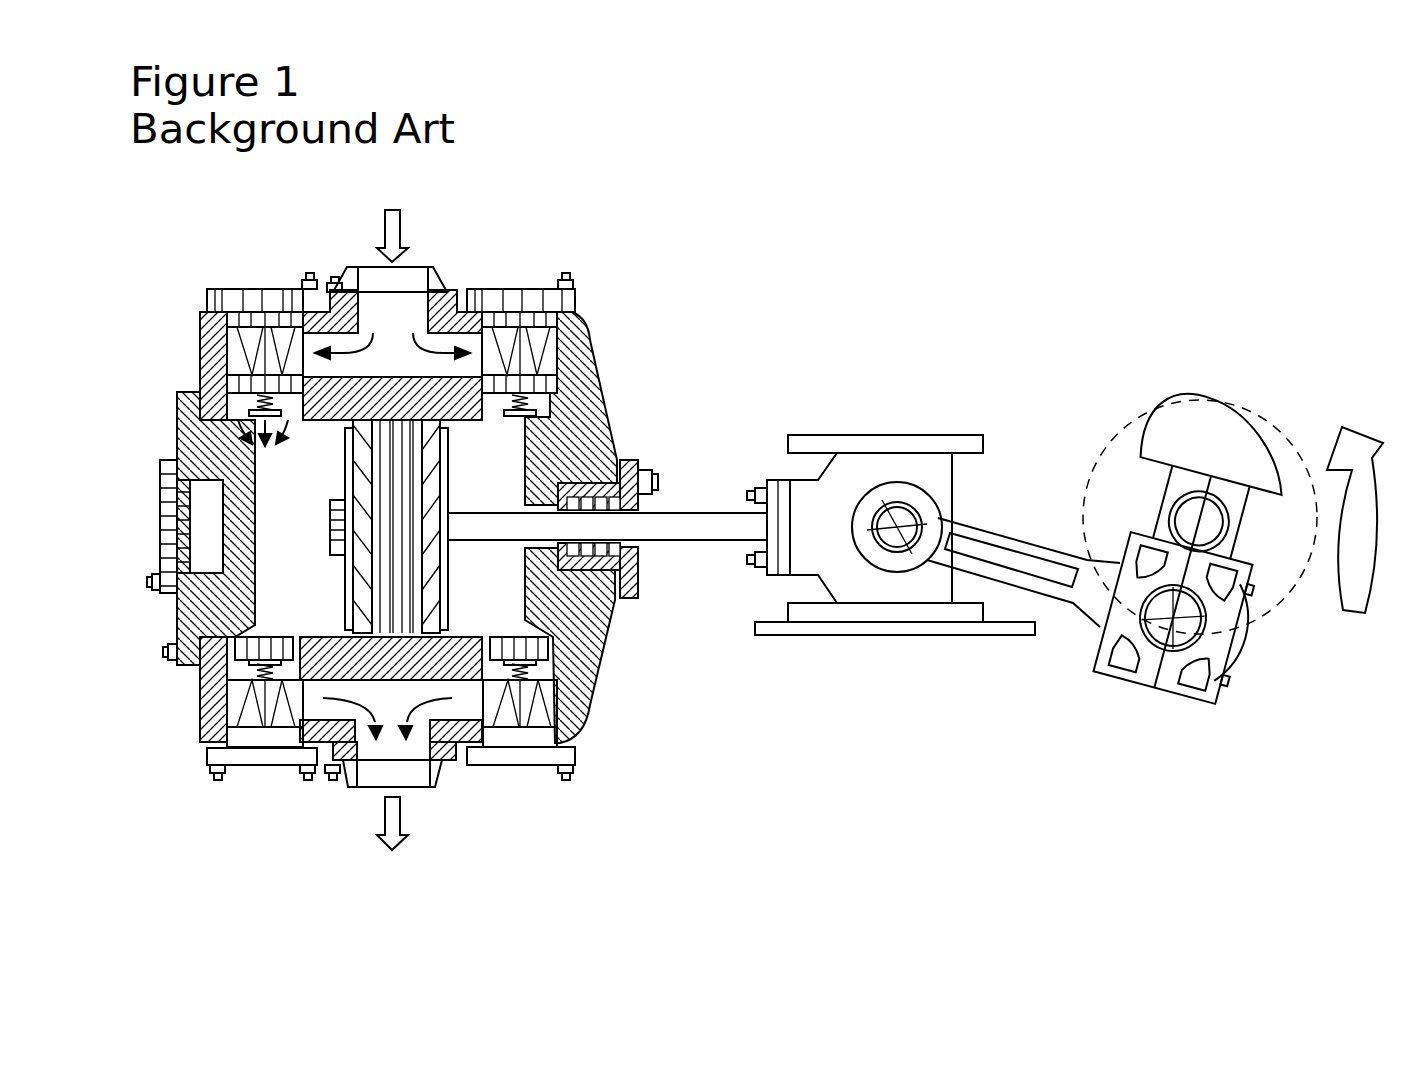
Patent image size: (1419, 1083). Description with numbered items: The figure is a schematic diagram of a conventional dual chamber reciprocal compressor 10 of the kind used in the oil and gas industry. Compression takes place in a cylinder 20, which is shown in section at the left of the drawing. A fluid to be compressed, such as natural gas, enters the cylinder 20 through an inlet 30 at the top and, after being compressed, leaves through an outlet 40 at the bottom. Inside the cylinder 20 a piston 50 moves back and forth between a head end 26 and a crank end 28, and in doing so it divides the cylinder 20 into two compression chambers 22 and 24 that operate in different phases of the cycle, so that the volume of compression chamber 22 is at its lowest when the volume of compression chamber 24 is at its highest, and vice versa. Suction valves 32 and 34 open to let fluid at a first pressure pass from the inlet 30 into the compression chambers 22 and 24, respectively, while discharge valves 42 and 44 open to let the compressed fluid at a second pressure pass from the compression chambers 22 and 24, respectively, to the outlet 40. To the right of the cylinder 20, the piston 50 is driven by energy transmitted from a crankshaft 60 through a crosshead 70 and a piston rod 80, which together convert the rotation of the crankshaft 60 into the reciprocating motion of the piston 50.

The dual chamber reciprocal compressor 10 is at (768, 382).
The cylinder 20 is at (462, 667).
The compression chamber 22 is at (287, 600).
The compression chamber 24 is at (503, 463).
The head end 26 is at (193, 445).
The crank end 28 is at (590, 455).
The inlet 30 is at (397, 295).
The suction valve 32 is at (268, 352).
The suction valve 34 is at (534, 353).
The outlet 40 is at (412, 775).
The discharge valve 42 is at (242, 717).
The discharge valve 44 is at (527, 710).
The piston 50 is at (430, 592).
The crankshaft 60 is at (1203, 648).
The crosshead 70 is at (853, 475).
The piston rod 80 is at (676, 520).